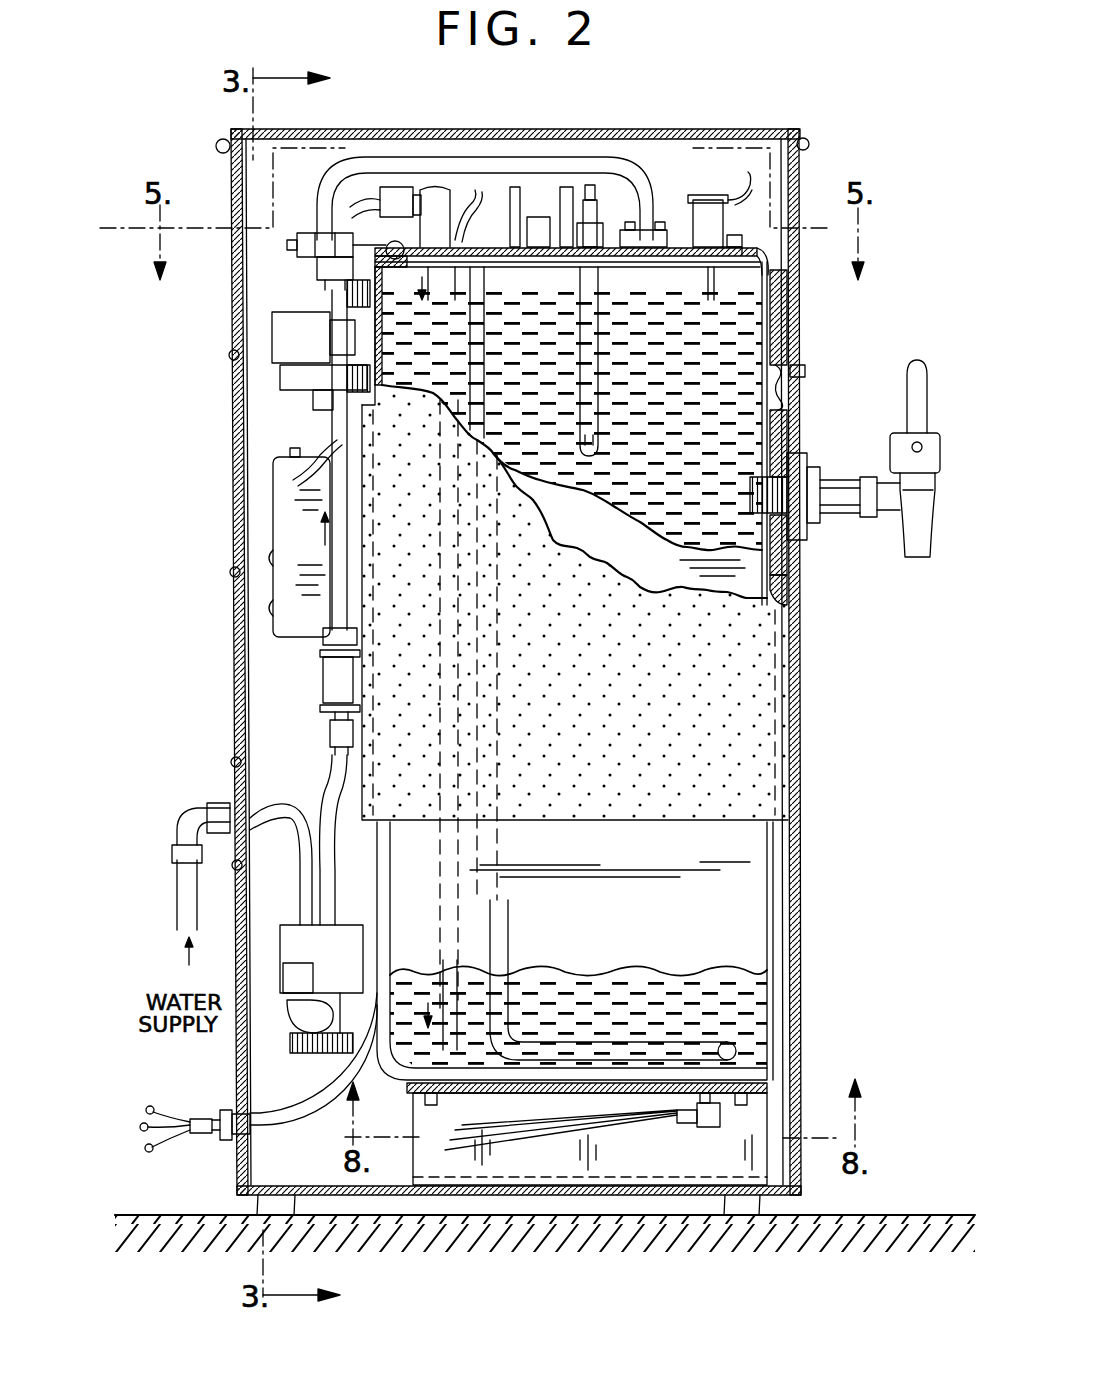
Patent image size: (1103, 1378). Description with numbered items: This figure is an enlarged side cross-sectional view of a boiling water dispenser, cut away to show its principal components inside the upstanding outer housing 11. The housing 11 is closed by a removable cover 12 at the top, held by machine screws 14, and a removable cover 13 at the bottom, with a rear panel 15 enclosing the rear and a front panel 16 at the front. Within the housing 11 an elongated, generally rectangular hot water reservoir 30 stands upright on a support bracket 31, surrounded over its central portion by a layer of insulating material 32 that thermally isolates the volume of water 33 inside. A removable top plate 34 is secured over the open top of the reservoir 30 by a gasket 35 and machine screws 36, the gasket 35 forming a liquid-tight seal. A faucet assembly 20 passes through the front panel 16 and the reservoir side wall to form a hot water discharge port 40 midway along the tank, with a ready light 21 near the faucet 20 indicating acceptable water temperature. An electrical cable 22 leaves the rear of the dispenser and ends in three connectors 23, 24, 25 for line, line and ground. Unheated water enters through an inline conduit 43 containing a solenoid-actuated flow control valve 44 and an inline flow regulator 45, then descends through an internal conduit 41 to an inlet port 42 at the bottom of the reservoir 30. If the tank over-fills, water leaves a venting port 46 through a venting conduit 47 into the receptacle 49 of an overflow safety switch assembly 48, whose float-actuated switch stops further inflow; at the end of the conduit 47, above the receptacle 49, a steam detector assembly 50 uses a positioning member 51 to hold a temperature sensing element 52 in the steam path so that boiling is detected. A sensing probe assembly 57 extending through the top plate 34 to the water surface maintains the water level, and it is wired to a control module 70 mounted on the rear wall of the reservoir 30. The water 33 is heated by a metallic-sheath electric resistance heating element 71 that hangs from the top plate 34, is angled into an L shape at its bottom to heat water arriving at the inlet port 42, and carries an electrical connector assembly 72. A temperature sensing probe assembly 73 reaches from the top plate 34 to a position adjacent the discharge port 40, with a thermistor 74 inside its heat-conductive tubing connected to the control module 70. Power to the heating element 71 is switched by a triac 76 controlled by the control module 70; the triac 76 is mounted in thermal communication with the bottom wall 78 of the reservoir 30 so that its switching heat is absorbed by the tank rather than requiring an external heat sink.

The outer housing 11 is at (552, 606).
The removable cover 12 is at (688, 128).
The removable cover 13 is at (573, 1197).
The machine screws 14 is at (800, 145).
The rear panel 15 is at (238, 568).
The front panel 16 is at (800, 995).
The faucet assembly 20 is at (890, 500).
The ready light 21 is at (805, 372).
The electrical cable 22 is at (300, 1122).
The connector 23 is at (152, 1107).
The connector 24 is at (149, 1152).
The connector 25 is at (140, 1128).
The hot water reservoir 30 is at (663, 948).
The support bracket 31 is at (652, 1110).
The insulating material 32 is at (790, 440).
The water 33 is at (633, 426).
The top plate 34 is at (682, 243).
The gasket 35 is at (760, 255).
The machine screws 36 is at (760, 240).
The hot water discharge port 40 is at (755, 493).
The internal conduit 41 is at (447, 913).
The inlet port 42 is at (478, 1035).
The inline conduit 43 is at (300, 432).
The solenoid-actuated flow control valve 44 is at (328, 950).
The inline flow regulator 45 is at (338, 677).
The venting port 46 is at (642, 267).
The venting conduit 47 is at (478, 165).
The overflow safety switch assembly 48 is at (262, 337).
The receptacle 49 is at (242, 355).
The steam detector assembly 50 is at (296, 212).
The positioning member 51 is at (292, 245).
The temperature sensing element 52 is at (312, 268).
The sensing probe assembly 57 is at (700, 290).
The control module 70 is at (298, 498).
The heating element 71 is at (480, 298).
The electrical connector assembly 72 is at (493, 240).
The temperature sensing probe assembly 73 is at (606, 206).
The thermistor 74 is at (573, 445).
The triac 76 is at (712, 1127).
The bottom wall 78 is at (560, 1110).